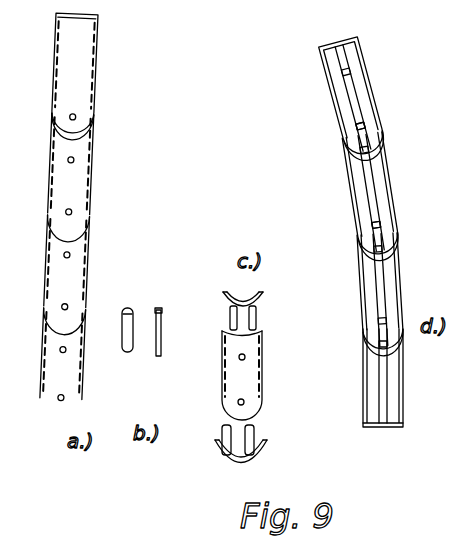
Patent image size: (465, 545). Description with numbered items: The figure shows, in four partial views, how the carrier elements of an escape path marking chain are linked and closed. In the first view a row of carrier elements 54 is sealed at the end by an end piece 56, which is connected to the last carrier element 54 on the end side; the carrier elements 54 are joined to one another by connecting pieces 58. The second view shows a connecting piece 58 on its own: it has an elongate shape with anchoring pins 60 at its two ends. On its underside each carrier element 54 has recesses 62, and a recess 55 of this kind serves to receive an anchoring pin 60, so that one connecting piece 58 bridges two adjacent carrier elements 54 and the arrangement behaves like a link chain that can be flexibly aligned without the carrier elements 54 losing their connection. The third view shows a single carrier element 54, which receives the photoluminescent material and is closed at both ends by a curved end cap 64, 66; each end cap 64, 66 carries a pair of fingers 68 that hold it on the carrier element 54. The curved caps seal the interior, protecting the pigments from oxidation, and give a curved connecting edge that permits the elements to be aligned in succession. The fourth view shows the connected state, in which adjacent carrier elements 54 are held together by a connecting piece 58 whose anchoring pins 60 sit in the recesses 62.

The carrier element 54 is at (73, 185).
The recess 55 is at (80, 115).
The end piece 56 is at (75, 79).
The connecting piece 58 is at (132, 328).
The anchoring pin 60 is at (128, 316).
The recess 62 is at (246, 357).
The curved end cap 64 is at (233, 297).
The curved end cap 66 is at (261, 443).
The pair of fingers 68 is at (253, 433).